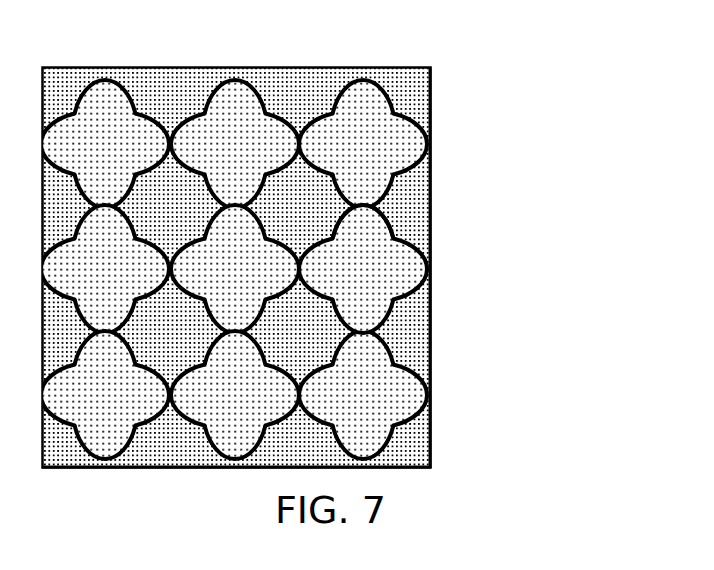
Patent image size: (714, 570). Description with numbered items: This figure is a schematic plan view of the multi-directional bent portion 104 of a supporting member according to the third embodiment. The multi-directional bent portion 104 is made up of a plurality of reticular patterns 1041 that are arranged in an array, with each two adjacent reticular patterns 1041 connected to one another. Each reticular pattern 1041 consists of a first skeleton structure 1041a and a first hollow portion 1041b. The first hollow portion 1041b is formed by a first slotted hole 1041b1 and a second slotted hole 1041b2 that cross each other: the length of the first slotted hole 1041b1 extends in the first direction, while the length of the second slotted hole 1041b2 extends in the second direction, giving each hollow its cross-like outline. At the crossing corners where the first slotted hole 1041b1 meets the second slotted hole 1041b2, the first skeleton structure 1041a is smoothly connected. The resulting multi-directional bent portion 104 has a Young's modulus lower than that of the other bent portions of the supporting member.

The multi-directional bent portion 104 is at (416, 42).
The reticular pattern 1041 is at (537, 90).
The first skeleton structure 1041a is at (396, 103).
The first hollow portion 1041b is at (396, 152).
The first slotted hole 1041b1 is at (397, 278).
The second slotted hole 1041b2 is at (367, 242).